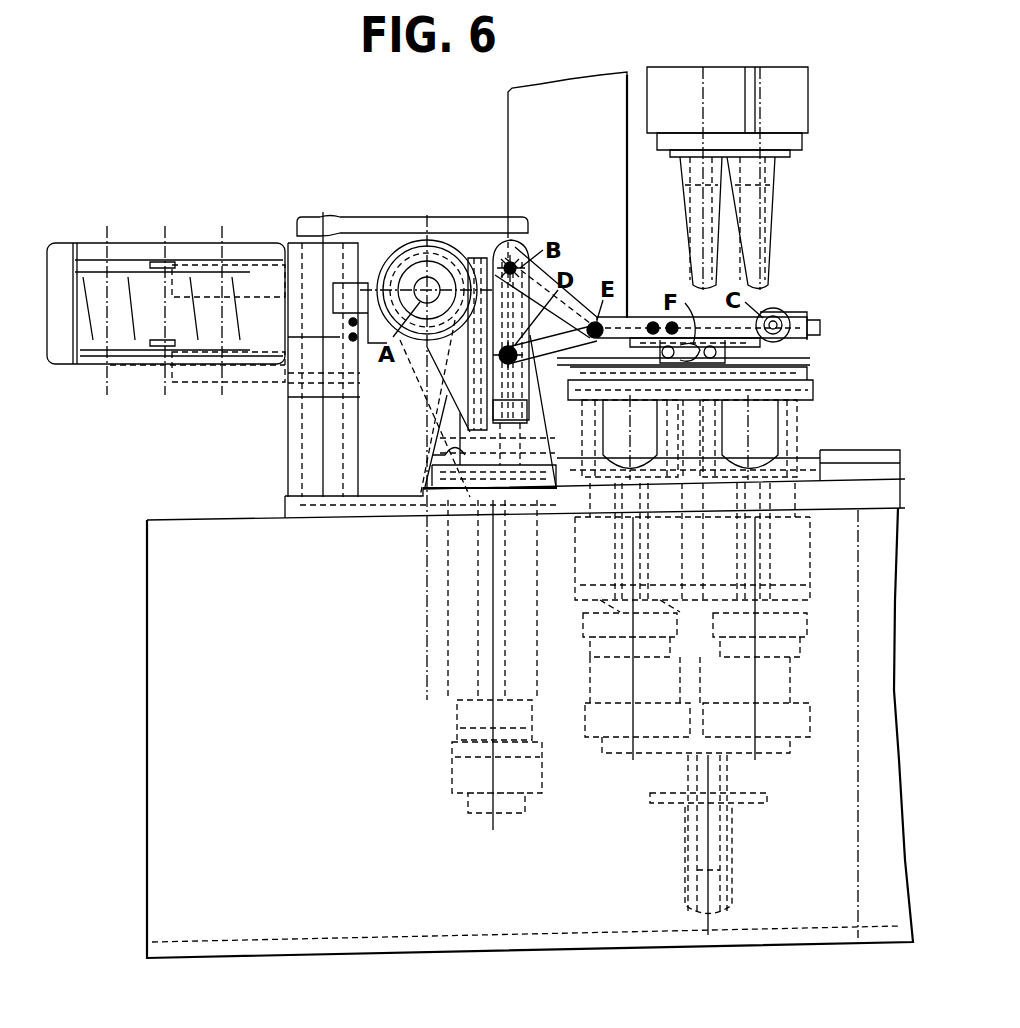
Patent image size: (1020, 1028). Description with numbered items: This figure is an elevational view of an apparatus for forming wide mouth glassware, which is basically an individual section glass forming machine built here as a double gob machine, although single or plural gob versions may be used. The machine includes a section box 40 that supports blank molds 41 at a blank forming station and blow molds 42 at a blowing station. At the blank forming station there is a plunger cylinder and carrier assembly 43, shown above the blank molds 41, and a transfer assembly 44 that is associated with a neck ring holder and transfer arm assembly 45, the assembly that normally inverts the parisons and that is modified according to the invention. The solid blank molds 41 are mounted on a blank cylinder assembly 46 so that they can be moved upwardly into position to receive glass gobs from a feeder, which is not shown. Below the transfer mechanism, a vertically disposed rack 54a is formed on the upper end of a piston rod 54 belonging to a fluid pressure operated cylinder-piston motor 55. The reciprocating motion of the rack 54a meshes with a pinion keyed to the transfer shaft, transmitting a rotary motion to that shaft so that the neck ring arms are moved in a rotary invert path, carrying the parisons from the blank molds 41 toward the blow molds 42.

The section box 40 is at (152, 775).
The blank molds 41 is at (772, 432).
The blow molds 42 is at (73, 342).
The plunger cylinder and carrier assembly 43 is at (800, 115).
The transfer assembly 44 is at (584, 297).
The neck ring holder and transfer arm assembly 45 is at (820, 329).
The blank cylinder assembly 46 is at (818, 713).
The piston rod 54 is at (485, 630).
The rack 54a is at (445, 538).
The fluid pressure operated cylinder-piston motor 55 is at (450, 757).